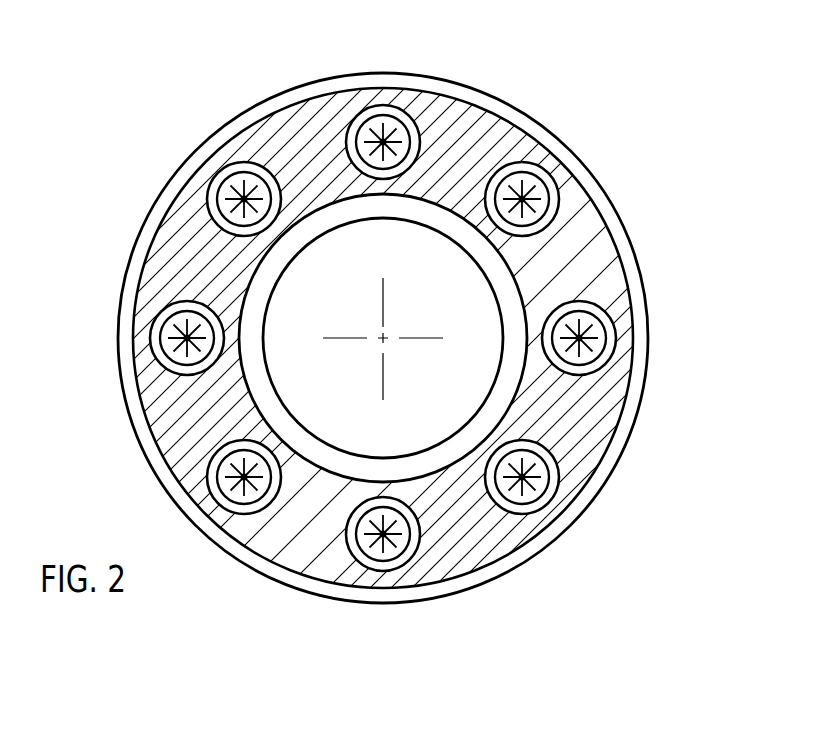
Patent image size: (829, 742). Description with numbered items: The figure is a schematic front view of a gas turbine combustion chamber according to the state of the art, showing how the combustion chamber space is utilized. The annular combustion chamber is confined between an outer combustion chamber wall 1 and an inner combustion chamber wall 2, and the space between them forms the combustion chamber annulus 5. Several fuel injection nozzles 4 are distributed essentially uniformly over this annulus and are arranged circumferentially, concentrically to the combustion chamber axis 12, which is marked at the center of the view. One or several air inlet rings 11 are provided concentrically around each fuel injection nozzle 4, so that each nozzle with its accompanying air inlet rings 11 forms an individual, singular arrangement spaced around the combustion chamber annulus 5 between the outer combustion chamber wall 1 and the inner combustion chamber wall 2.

The outer combustion chamber wall 1 is at (589, 193).
The inner combustion chamber wall 2 is at (516, 282).
The fuel injection nozzle 4 is at (243, 200).
The combustion chamber annulus 5 is at (590, 420).
The air inlet ring 11 is at (143, 378).
The combustion chamber axis 12 is at (385, 338).